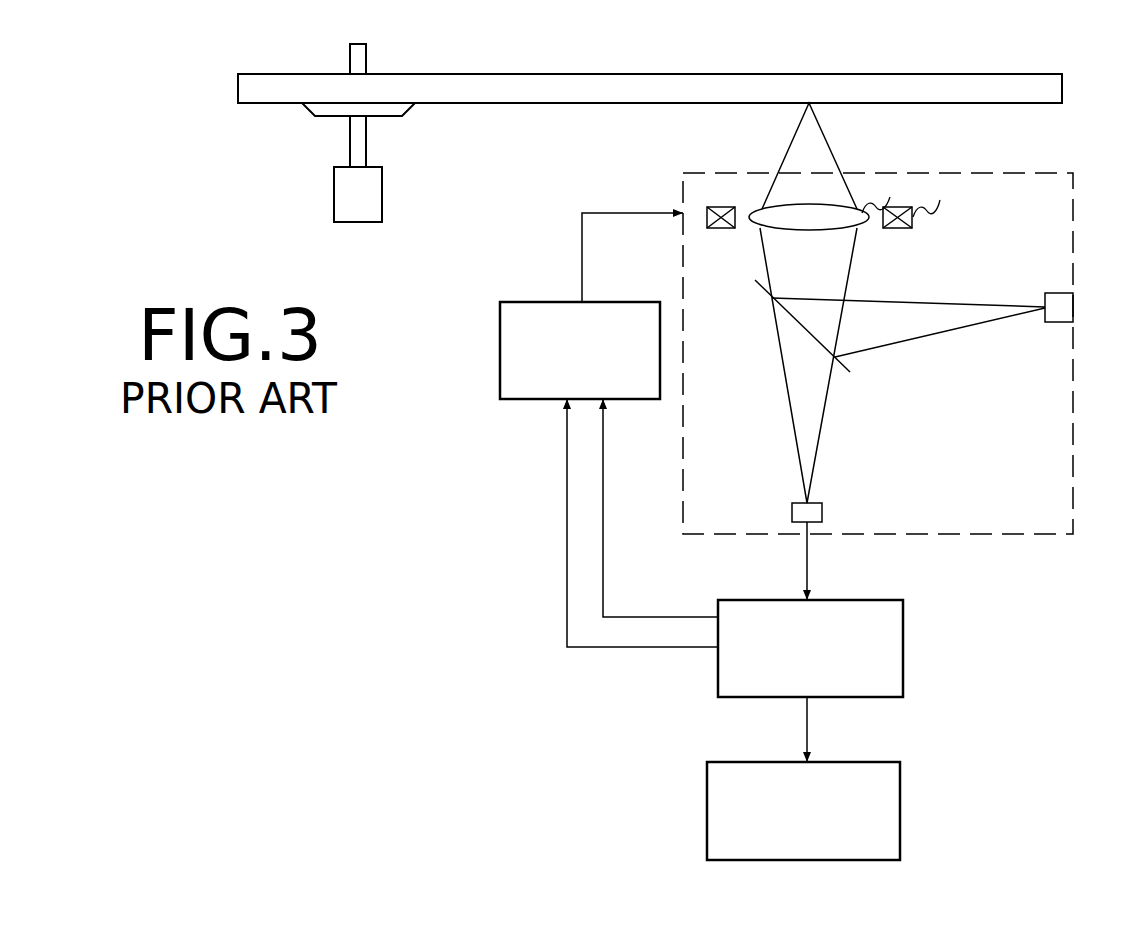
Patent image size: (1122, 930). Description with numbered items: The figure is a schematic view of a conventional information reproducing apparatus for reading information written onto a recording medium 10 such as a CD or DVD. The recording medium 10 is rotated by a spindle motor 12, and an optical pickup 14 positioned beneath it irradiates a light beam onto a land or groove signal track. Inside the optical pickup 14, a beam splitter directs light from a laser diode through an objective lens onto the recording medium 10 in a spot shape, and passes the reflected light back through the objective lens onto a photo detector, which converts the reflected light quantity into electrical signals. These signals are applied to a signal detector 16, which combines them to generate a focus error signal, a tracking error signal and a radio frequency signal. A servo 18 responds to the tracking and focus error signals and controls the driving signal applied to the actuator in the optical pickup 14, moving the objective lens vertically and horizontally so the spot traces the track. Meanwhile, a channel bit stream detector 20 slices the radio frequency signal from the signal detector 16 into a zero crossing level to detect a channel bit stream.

The recording medium 10 is at (993, 75).
The spindle motor 12 is at (373, 165).
The optical pickup 14 is at (993, 172).
The signal detector 16 is at (895, 598).
The servo 18 is at (623, 298).
The channel bit stream detector 20 is at (890, 758).